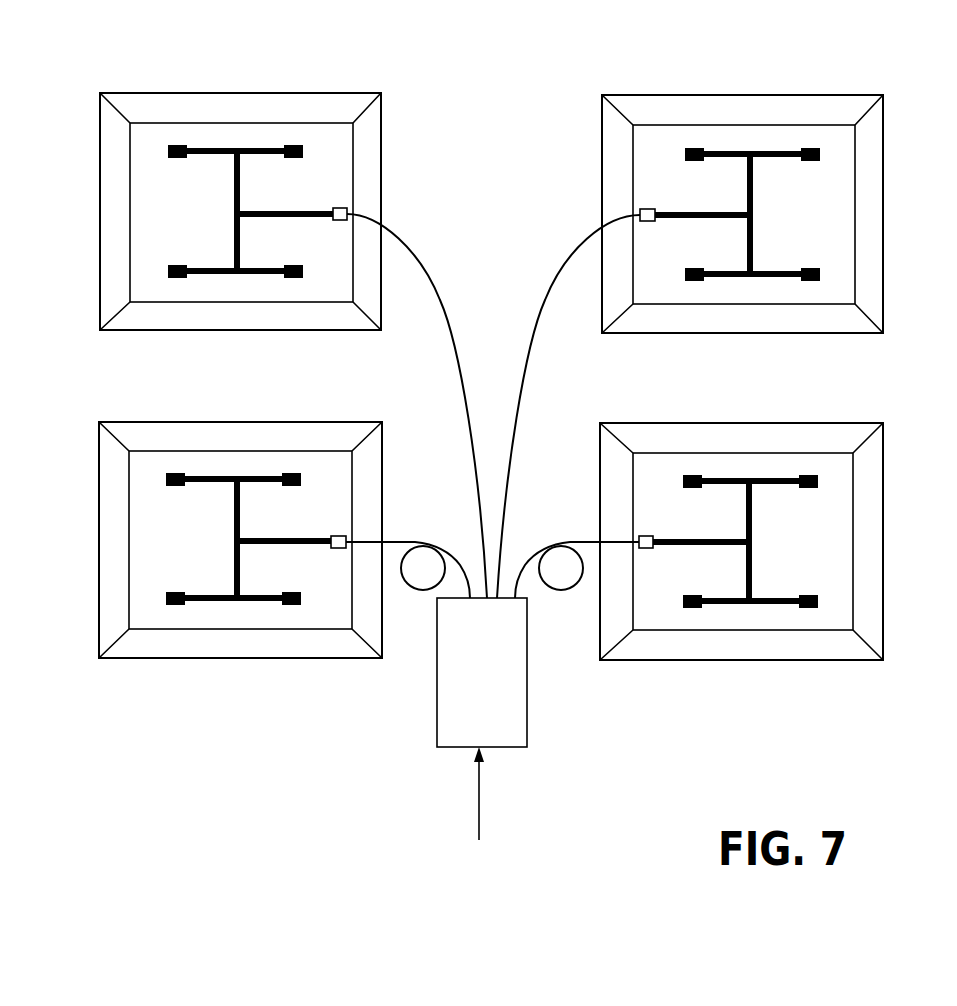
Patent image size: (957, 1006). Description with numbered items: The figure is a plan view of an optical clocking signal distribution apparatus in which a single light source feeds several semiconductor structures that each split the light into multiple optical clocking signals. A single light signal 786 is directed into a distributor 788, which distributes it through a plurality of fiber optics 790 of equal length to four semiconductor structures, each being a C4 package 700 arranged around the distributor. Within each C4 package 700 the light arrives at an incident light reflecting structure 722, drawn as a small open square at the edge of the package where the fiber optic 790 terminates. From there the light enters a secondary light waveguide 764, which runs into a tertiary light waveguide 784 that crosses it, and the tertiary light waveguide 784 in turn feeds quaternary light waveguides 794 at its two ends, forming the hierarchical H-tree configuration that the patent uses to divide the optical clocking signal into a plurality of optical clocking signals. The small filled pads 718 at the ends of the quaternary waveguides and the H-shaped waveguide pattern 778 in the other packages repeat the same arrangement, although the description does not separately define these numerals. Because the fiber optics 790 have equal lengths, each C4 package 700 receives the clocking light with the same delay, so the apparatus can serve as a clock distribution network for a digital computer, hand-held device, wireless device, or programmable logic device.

The C4 package 700 is at (133, 97).
The electrode pad 718 is at (292, 145).
The incident light reflecting structure 722 is at (345, 208).
The secondary light waveguide 764 is at (321, 198).
The electrode pattern 778 is at (754, 140).
The tertiary light waveguide 784 is at (228, 233).
The single light signal 786 is at (480, 790).
The distributor 788 is at (503, 685).
The fiber optics 790 is at (548, 298).
The quaternary light waveguides 794 is at (237, 143).